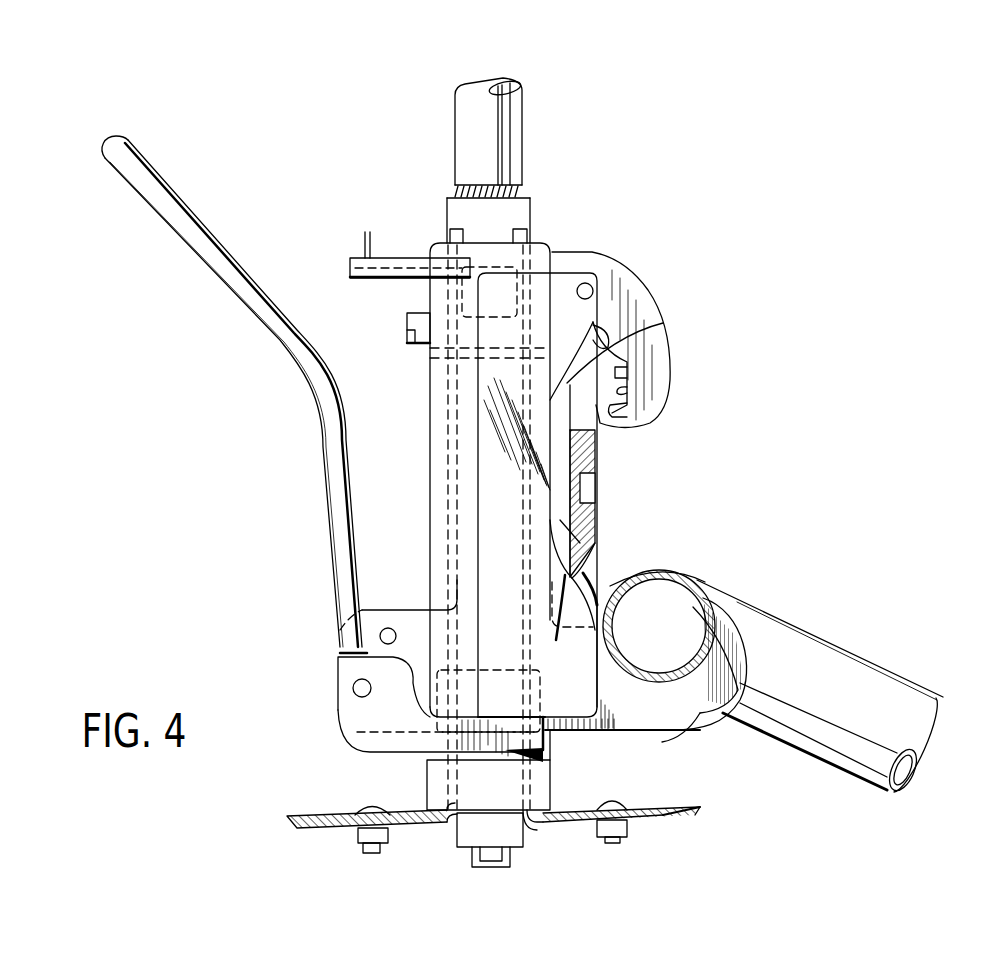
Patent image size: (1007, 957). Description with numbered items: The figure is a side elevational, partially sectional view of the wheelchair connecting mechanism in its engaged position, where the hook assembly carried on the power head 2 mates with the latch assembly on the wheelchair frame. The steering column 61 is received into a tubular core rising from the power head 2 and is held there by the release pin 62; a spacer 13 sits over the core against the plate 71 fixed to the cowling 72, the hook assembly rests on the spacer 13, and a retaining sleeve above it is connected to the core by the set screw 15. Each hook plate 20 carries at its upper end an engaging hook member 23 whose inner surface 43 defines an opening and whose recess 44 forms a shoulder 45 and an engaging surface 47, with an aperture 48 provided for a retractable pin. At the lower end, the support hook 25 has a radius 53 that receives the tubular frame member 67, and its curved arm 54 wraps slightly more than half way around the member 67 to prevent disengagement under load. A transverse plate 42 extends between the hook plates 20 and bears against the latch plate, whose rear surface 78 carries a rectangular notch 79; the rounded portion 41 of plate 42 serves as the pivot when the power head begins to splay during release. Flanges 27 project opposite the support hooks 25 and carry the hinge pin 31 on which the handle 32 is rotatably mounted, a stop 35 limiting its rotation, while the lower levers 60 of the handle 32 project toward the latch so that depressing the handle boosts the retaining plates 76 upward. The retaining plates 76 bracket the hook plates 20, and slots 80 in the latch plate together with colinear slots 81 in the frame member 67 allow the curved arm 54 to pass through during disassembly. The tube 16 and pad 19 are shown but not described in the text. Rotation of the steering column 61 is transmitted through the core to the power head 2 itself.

The power head 2 is at (653, 808).
The spacer 13 is at (550, 776).
The set screw 15 is at (407, 320).
The tube 16 is at (783, 640).
The clamping pad 19 is at (595, 545).
The hook plate 20 is at (470, 420).
The engaging hook member 23 is at (655, 290).
The support hook 25 is at (650, 733).
The flange 27 is at (370, 610).
The hinge pin 31 is at (353, 688).
The handle 32 is at (257, 282).
The stop 35 is at (388, 628).
The rounded portion 41 is at (597, 360).
The transverse plate 42 is at (595, 520).
The inner surface 43 is at (600, 350).
The recess 44 is at (627, 390).
The shoulder 45 is at (627, 377).
The engaging surface 47 is at (612, 413).
The aperture 48 is at (585, 283).
The radius 53 is at (667, 730).
The curved arm 54 is at (732, 618).
The lower lever 60 is at (505, 757).
The steering column 61 is at (492, 164).
The release pin 62 is at (405, 257).
The tubular frame member 67 is at (705, 590).
The plate 71 is at (615, 838).
The cowling 72 is at (672, 818).
The retaining plate 76 is at (497, 525).
The rear surface 78 is at (597, 457).
The notch 79 is at (590, 490).
The slot 80 is at (583, 573).
The slot 81 is at (659, 626).